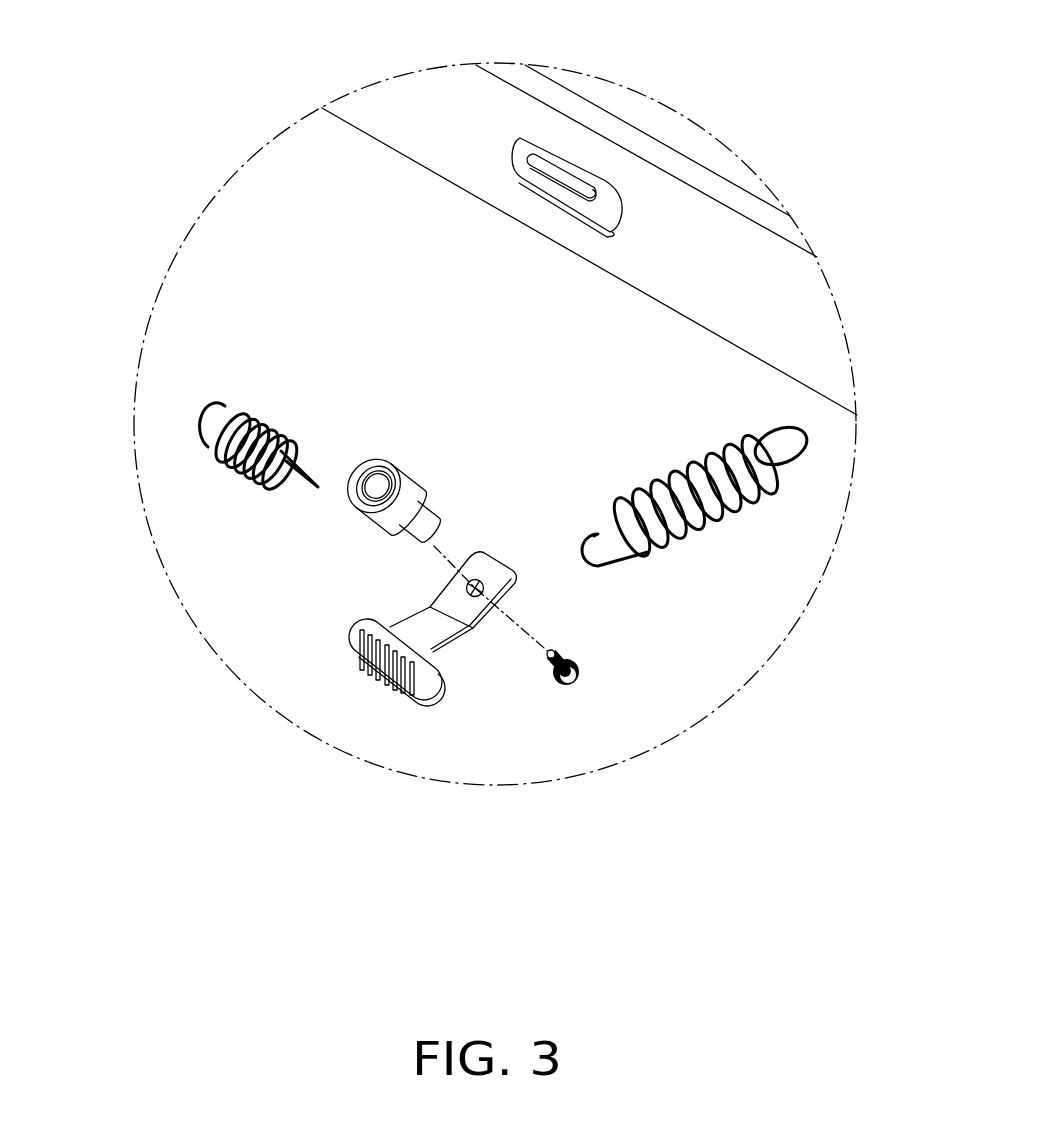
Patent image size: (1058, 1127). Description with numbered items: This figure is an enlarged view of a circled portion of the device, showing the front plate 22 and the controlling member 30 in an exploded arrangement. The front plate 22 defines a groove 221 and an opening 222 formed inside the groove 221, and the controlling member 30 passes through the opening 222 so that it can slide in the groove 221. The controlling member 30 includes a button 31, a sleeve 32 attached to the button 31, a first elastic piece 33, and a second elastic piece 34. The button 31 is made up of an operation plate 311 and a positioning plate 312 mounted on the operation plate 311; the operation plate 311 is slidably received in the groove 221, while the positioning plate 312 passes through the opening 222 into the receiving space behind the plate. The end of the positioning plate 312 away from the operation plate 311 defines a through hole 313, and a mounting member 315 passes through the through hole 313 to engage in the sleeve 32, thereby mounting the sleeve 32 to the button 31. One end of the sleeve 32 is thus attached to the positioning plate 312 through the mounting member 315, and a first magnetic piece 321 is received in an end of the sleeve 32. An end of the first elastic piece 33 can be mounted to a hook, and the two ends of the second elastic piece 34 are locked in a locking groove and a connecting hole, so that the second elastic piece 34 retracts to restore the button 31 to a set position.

The front plate 22 is at (423, 110).
The groove 221 is at (605, 203).
The opening 222 is at (562, 173).
The controlling member 30 is at (748, 746).
The button 31 is at (398, 728).
The operation plate 311 is at (356, 704).
The positioning plate 312 is at (437, 637).
The through hole 313 is at (479, 596).
The mounting member 315 is at (580, 664).
The sleeve 32 is at (284, 578).
The first magnetic piece 321 is at (365, 498).
The first elastic piece 33 is at (677, 525).
The second elastic piece 34 is at (248, 463).